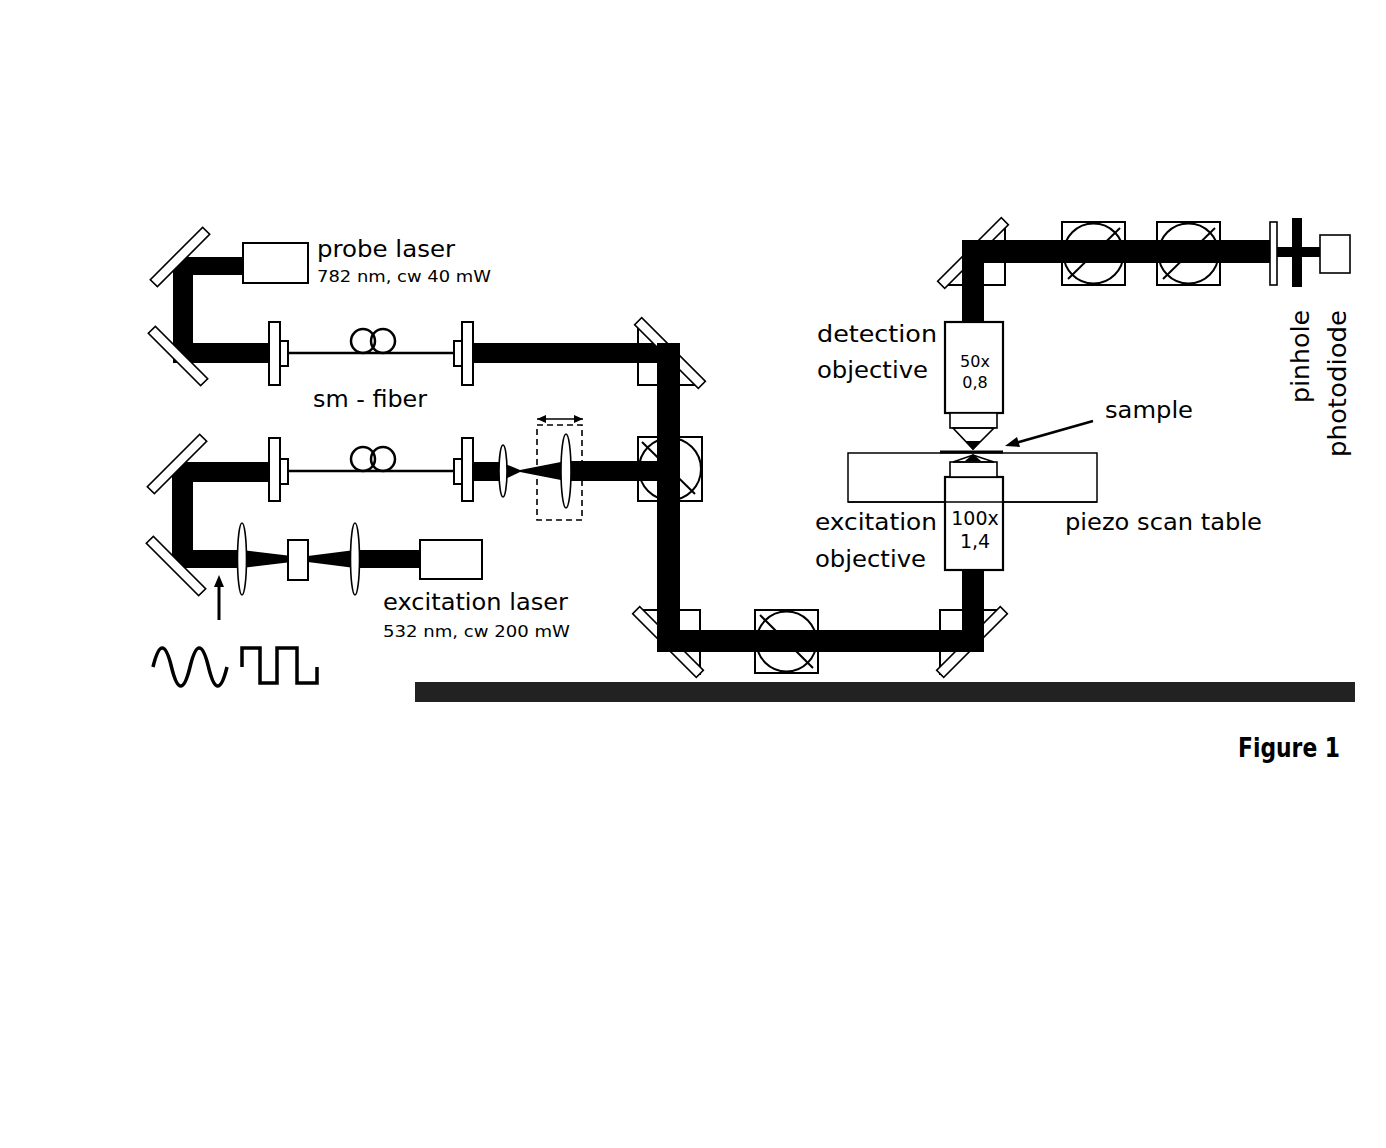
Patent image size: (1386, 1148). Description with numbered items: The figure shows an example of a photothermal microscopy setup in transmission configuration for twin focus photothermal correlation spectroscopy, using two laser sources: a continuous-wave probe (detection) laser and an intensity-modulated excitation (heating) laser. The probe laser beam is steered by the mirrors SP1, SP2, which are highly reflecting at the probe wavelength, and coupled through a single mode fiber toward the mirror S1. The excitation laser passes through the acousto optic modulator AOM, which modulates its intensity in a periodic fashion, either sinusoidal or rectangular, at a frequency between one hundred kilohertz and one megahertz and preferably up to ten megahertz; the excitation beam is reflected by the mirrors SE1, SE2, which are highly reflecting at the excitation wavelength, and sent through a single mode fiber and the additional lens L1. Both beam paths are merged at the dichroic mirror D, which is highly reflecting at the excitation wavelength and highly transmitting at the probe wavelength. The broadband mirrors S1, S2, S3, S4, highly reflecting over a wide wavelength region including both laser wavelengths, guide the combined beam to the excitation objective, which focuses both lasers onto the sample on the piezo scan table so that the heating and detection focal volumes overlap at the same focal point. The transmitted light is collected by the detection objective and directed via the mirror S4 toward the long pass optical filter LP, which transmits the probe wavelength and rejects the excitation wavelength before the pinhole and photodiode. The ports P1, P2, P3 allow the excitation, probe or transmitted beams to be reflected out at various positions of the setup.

The mirror for the probe laser SP1 is at (168, 256).
The mirror for the probe laser SP2 is at (167, 360).
The mirror for the excitation laser SE1 is at (166, 567).
The mirror for the excitation laser SE2 is at (167, 463).
The mirror S1 is at (677, 352).
The mirror S2 is at (665, 645).
The mirror S3 is at (977, 645).
The mirror S4 is at (969, 250).
The dichroic mirror D is at (683, 469).
The port P1 is at (786, 625).
The port P2 is at (1093, 272).
The port P3 is at (1188, 272).
The additional lens L1 is at (560, 483).
The acousto optic modulator AOM is at (299, 582).
The long pass optical filter LP is at (1273, 279).